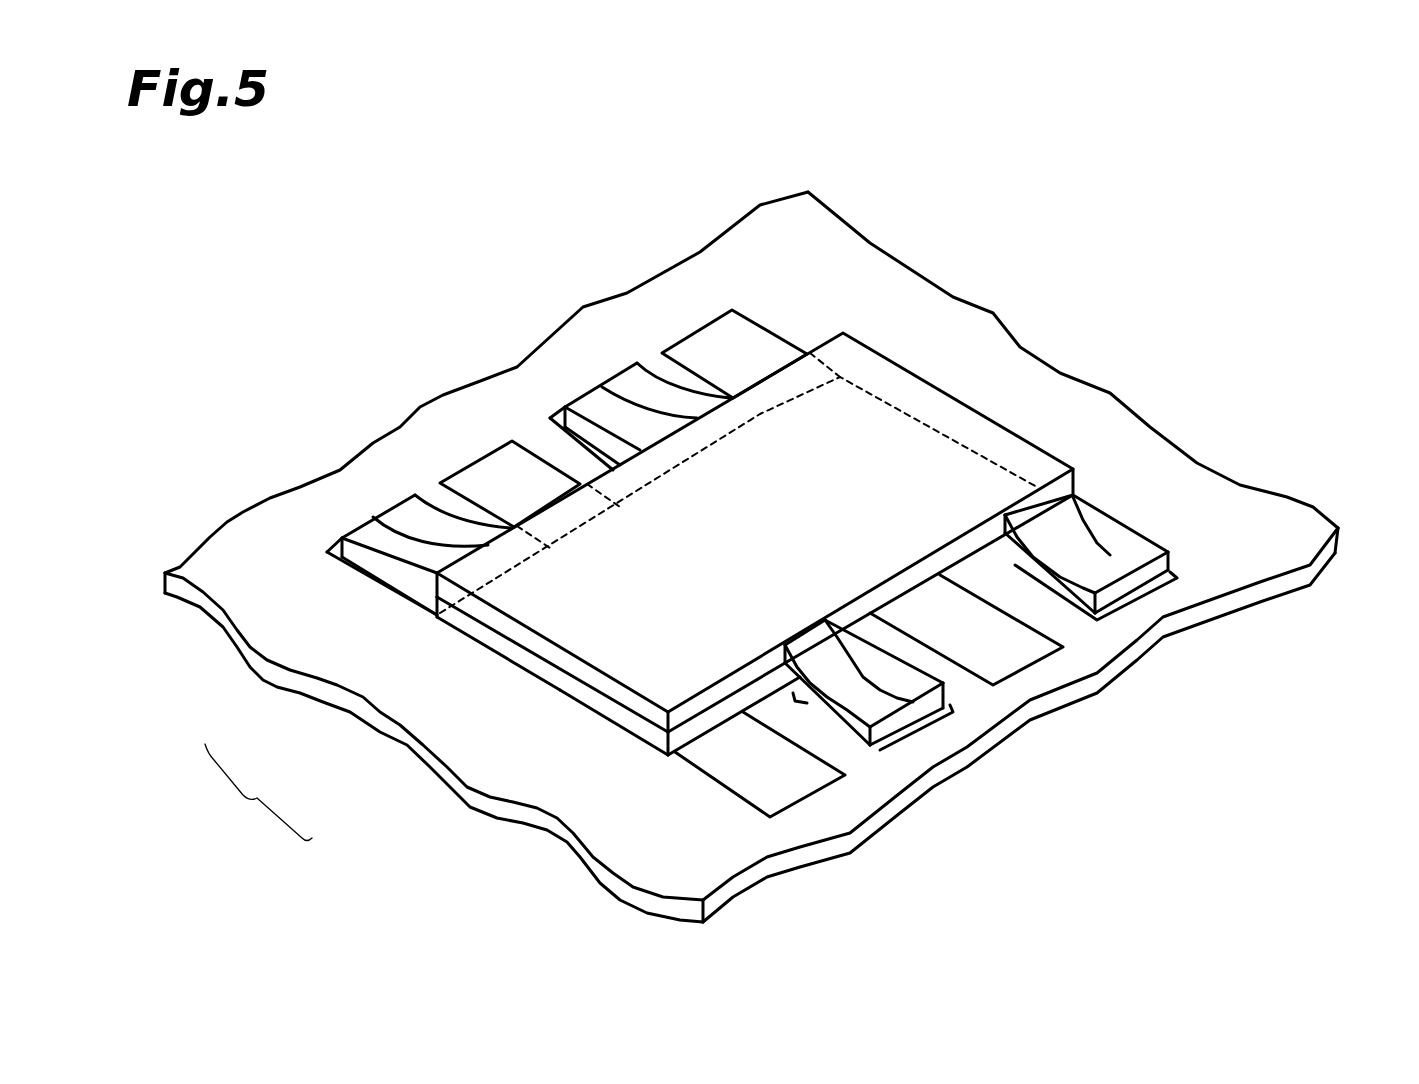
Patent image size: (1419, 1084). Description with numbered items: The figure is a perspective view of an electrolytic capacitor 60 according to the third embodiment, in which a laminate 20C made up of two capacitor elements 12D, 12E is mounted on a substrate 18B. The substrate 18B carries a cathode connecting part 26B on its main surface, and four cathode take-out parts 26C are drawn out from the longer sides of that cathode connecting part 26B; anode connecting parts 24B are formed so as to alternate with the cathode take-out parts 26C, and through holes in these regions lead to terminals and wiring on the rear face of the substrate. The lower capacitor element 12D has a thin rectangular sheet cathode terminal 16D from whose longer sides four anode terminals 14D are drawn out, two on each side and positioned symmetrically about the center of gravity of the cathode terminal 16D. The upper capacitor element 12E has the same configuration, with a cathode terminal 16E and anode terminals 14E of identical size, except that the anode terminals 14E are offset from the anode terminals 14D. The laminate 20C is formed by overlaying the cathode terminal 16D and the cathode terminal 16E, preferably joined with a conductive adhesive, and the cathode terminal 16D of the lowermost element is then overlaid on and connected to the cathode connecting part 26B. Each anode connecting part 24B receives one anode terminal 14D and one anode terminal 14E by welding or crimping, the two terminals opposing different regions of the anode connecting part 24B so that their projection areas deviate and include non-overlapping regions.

The electrolytic capacitor 60 is at (1240, 328).
The substrate 18B is at (787, 557).
The cathode connecting part 26B is at (767, 506).
The cathode take-out parts 26C is at (788, 556).
The anode terminals 14D is at (784, 511).
The anode terminals 14E is at (803, 540).
The anode connecting parts 24B is at (745, 582).
The capacitor element 12D is at (481, 652).
The capacitor element 12E is at (453, 620).
The cathode terminal 16D is at (630, 718).
The cathode terminal 16E is at (570, 658).
The laminate 20C is at (246, 792).